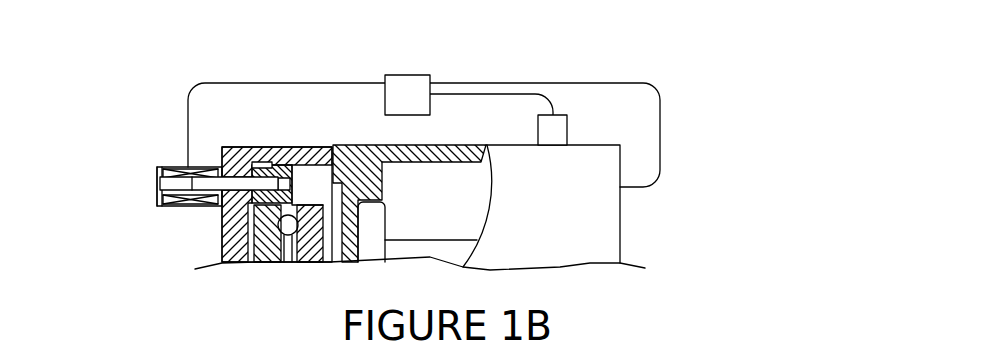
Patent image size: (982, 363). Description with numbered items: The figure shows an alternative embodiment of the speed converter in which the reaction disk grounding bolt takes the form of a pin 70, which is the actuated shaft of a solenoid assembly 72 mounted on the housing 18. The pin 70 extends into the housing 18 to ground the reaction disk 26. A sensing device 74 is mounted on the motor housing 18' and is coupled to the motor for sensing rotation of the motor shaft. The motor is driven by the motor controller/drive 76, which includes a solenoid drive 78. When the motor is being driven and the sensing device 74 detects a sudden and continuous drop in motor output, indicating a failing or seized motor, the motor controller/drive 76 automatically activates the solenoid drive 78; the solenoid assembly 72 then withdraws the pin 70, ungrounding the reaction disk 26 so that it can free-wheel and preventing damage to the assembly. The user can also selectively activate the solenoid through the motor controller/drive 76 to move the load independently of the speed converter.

The housing 18 is at (217, 204).
The motor housing 18' is at (462, 141).
The reaction disk 26 is at (271, 172).
The pin 70 is at (240, 168).
The solenoid assembly 72 is at (170, 168).
The sensing device 74 is at (569, 113).
The motor controller/drive 76 is at (399, 74).
The solenoid drive 78 is at (408, 97).